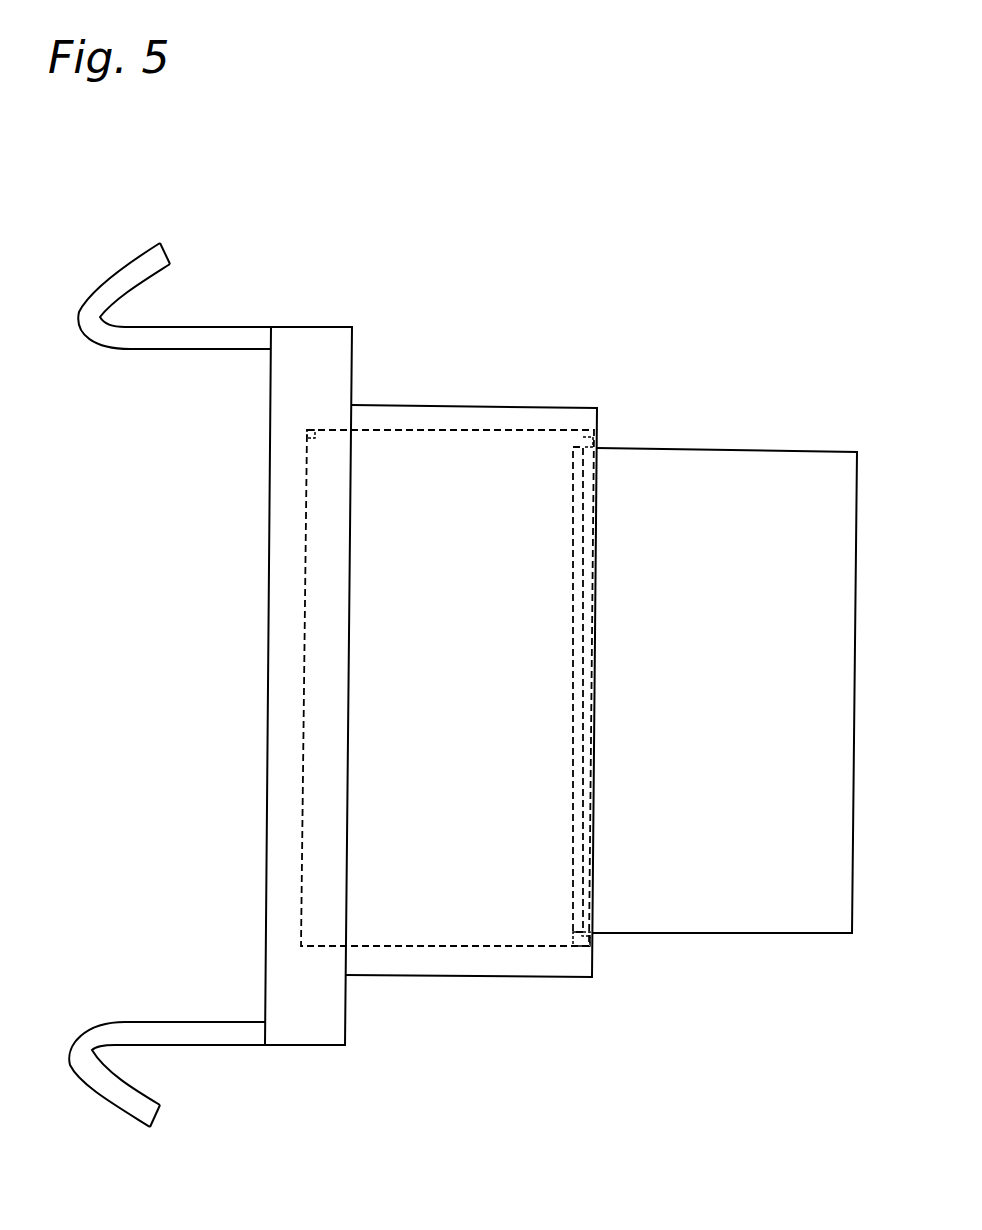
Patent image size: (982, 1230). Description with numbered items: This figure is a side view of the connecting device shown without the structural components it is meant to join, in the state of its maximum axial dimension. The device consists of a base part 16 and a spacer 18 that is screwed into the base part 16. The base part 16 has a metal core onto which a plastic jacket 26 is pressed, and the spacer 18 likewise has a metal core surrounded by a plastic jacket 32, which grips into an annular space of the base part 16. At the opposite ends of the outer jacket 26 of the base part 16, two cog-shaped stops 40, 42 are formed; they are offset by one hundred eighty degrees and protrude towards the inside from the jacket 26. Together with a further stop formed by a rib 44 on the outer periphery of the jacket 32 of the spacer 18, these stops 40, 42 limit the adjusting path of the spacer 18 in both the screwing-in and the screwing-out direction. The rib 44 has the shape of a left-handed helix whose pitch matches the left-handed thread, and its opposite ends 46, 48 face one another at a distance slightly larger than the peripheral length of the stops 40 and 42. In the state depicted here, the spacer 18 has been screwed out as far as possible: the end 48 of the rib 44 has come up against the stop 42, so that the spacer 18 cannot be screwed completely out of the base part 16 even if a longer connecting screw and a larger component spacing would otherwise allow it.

The base part 16 is at (345, 308).
The spacer 18 is at (739, 642).
The plastic jacket 26 is at (498, 412).
The plastic jacket 32 is at (685, 465).
The stop 40 is at (307, 437).
The stop 42 is at (592, 942).
The rib 44 is at (580, 530).
The end of the rib 46 is at (575, 940).
The end of the rib 48 is at (585, 941).